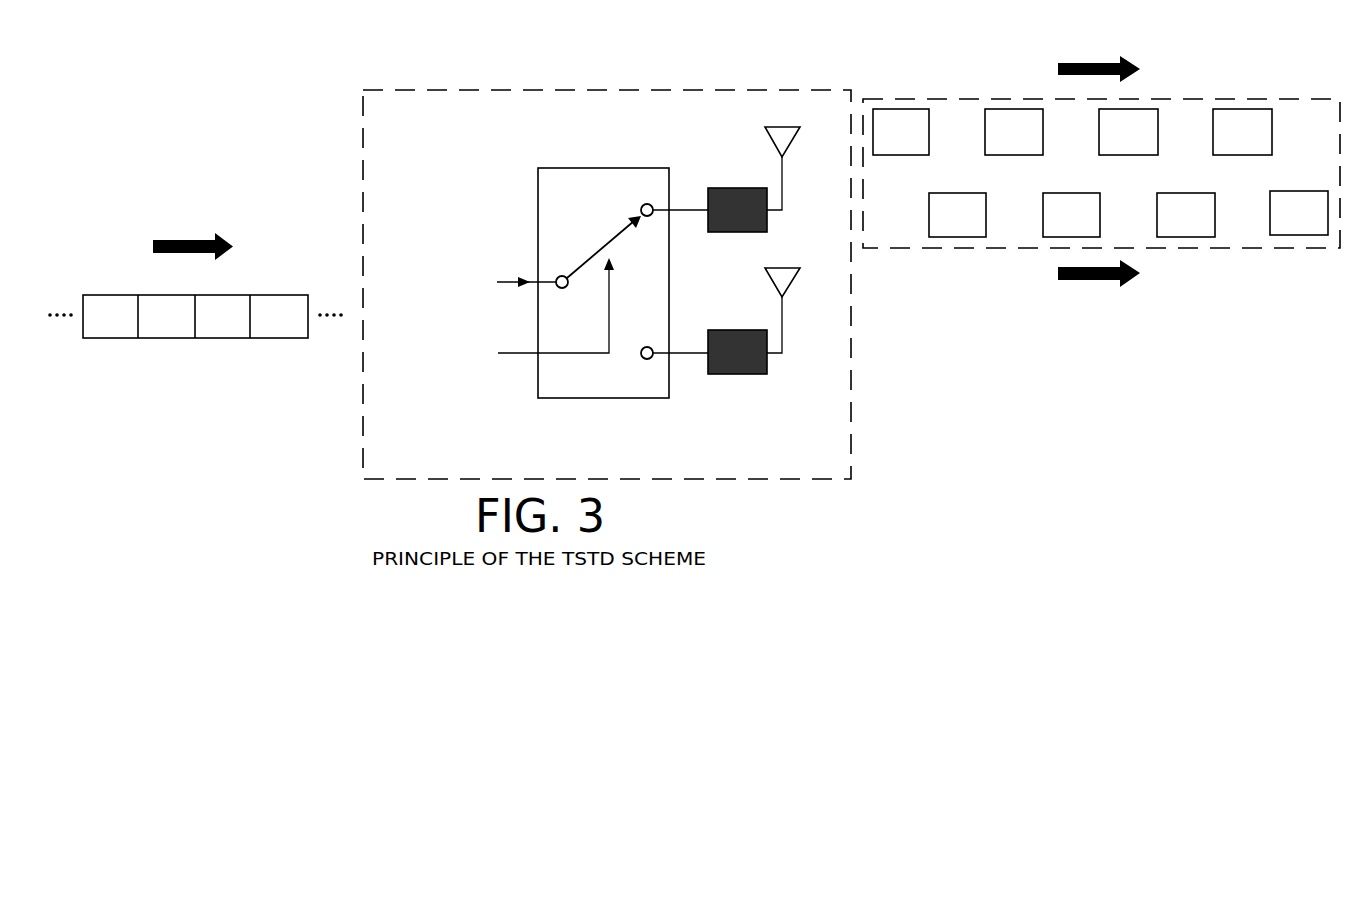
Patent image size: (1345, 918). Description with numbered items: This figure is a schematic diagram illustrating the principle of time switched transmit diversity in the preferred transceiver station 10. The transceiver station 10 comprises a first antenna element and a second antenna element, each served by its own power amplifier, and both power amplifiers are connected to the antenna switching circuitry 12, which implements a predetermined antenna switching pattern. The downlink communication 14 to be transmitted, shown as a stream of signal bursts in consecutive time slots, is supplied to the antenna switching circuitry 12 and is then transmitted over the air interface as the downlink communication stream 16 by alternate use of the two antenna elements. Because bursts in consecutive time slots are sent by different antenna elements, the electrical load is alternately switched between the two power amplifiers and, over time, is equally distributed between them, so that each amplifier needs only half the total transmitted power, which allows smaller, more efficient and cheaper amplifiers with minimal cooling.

The transceiver station 10 is at (432, 90).
The antenna switching circuitry 12 is at (596, 168).
The downlink communication 14 is at (116, 338).
The downlink communication stream 16 is at (1274, 248).